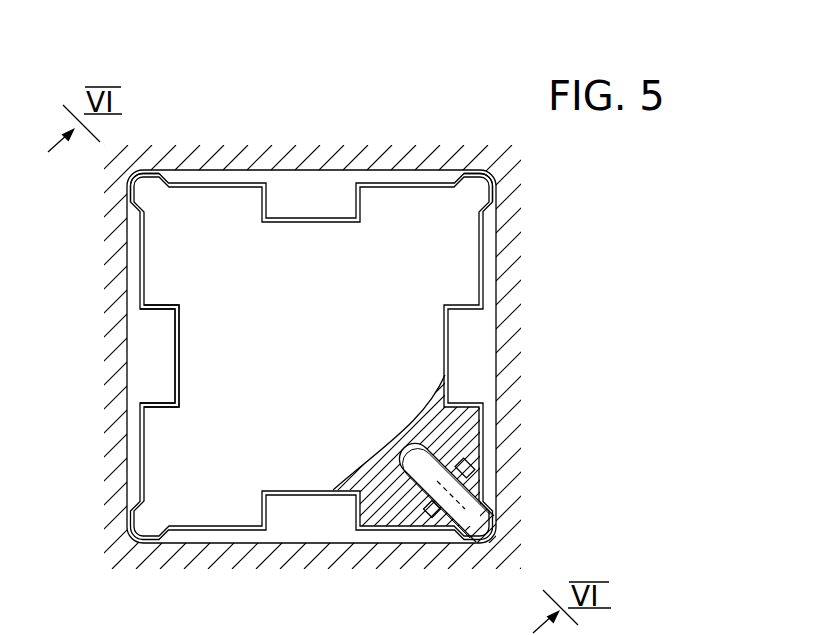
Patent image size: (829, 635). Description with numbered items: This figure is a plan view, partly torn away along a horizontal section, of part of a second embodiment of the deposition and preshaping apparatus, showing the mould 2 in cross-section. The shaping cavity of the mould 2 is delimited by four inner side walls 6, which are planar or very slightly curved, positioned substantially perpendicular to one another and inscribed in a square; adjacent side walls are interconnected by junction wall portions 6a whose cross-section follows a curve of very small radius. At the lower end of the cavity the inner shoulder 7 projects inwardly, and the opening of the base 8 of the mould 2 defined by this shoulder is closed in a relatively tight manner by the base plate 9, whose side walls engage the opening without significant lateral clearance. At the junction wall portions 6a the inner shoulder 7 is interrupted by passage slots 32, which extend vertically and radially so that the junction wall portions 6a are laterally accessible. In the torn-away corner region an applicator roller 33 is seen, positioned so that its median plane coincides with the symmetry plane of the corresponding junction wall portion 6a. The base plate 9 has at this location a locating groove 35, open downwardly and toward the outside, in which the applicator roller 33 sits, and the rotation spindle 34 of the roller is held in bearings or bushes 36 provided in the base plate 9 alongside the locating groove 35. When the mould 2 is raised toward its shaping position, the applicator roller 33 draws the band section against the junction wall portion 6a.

The mould 2 is at (503, 243).
The inner side walls 6 is at (326, 177).
The junction wall portions 6a is at (501, 174).
The inner shoulder 7 is at (347, 188).
The base 8 is at (148, 438).
The base plate 9 is at (266, 340).
The passage slots 32 is at (128, 183).
The applicator rollers 33 is at (480, 526).
The rotation spindles 34 is at (431, 506).
The locating grooves 35 is at (437, 439).
The bearings or bushes 36 is at (458, 467).